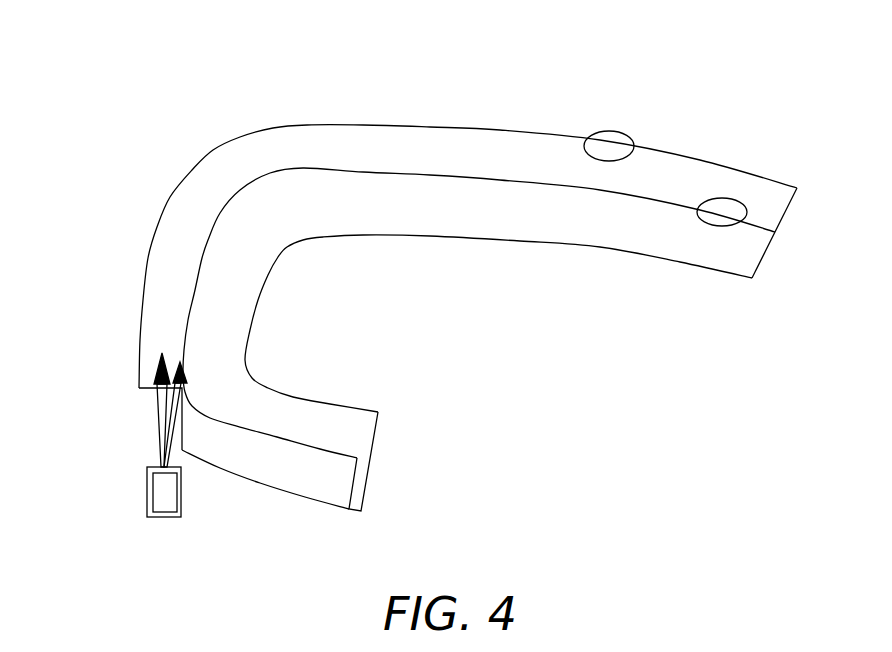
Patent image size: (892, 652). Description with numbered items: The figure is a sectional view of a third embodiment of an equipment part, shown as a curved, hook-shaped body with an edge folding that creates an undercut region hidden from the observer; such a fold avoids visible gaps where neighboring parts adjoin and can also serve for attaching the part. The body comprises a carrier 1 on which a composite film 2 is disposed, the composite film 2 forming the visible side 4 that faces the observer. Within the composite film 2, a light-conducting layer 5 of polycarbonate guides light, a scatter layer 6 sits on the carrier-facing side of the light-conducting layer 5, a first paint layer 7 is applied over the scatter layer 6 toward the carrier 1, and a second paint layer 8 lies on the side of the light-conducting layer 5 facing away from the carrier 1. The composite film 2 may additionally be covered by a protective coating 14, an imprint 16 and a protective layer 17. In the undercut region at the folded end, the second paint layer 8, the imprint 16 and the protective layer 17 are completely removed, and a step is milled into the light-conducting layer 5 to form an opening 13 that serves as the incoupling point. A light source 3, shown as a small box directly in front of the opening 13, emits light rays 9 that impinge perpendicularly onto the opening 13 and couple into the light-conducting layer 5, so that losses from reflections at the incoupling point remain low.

The carrier 1 is at (515, 215).
The composite film 2 is at (800, 188).
The light source 3 is at (157, 503).
The visible side 4 is at (482, 278).
The light-conducting layer 5 is at (463, 145).
The scatter layer 6 is at (717, 266).
The first paint layer 7 is at (717, 266).
The second paint layer 8 is at (645, 133).
The light rays 9 is at (175, 415).
The opening 13 is at (133, 417).
The protective coating 14 is at (715, 224).
The imprint 16 is at (645, 133).
The protective layer 17 is at (608, 132).